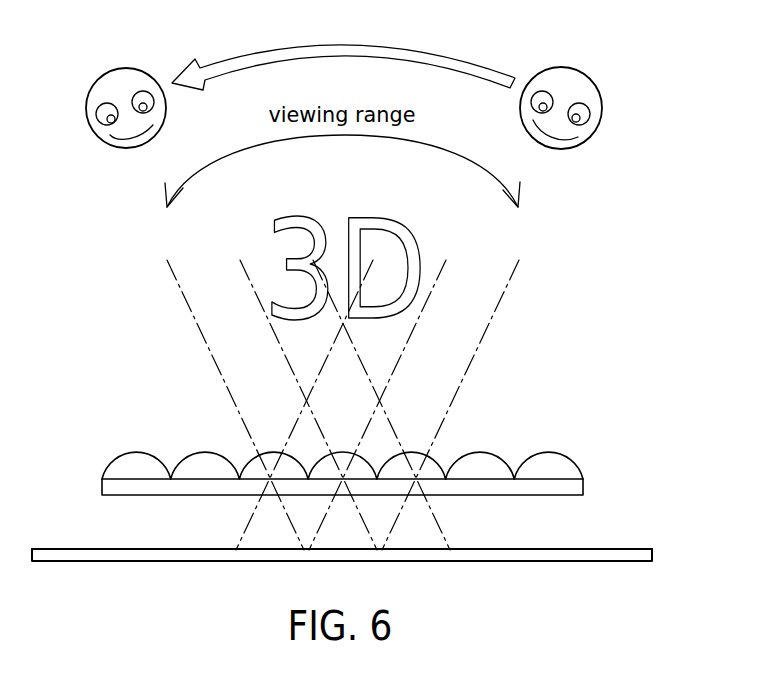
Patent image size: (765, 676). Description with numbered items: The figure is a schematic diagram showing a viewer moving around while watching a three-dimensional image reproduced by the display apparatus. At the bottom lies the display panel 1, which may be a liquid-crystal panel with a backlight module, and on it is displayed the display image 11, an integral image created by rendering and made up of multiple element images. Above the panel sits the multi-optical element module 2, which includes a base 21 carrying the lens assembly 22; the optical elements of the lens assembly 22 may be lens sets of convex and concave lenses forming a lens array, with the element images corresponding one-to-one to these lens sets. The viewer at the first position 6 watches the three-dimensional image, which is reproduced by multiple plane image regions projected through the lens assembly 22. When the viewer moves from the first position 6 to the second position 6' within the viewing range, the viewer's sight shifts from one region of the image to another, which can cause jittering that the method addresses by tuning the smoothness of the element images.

The second position 6' is at (100, 91).
The first position 6 is at (584, 91).
The multi-optical element module 2 is at (373, 452).
The lens assembly 22 is at (548, 468).
The base 21 is at (573, 486).
The display panel 1 is at (371, 539).
The display image 11 is at (615, 548).